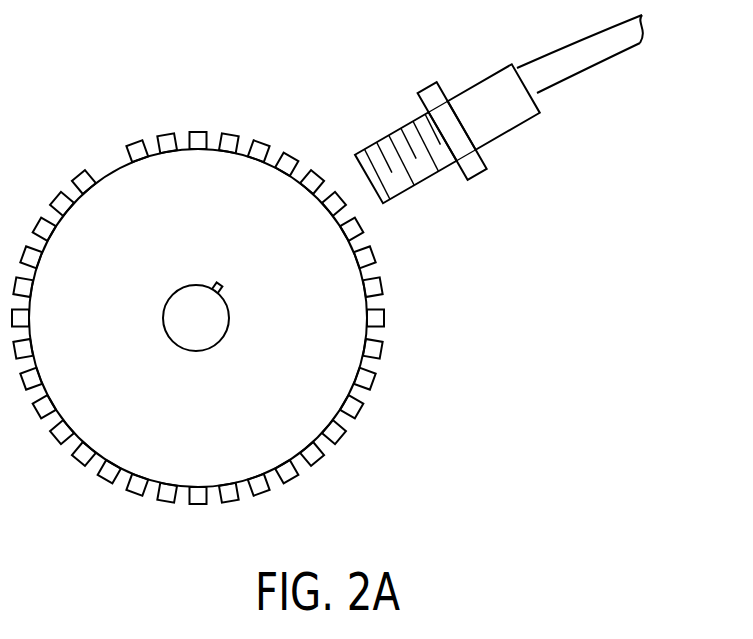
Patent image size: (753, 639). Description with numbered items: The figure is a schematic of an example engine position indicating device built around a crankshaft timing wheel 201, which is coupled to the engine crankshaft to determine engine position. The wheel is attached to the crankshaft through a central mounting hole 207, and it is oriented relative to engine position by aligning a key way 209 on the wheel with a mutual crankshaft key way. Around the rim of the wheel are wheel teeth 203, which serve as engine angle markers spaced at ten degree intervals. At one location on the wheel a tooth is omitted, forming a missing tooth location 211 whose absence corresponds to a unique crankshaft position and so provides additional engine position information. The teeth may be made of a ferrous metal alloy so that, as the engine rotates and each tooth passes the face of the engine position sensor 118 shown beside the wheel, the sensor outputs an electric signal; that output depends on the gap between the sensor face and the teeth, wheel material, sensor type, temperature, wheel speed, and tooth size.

The engine position sensor 118 is at (477, 83).
The crankshaft timing wheel 201 is at (198, 333).
The wheel teeth 203 is at (134, 133).
The mounting hole 207 is at (237, 294).
The key way 209 is at (213, 269).
The missing tooth location 211 is at (98, 154).